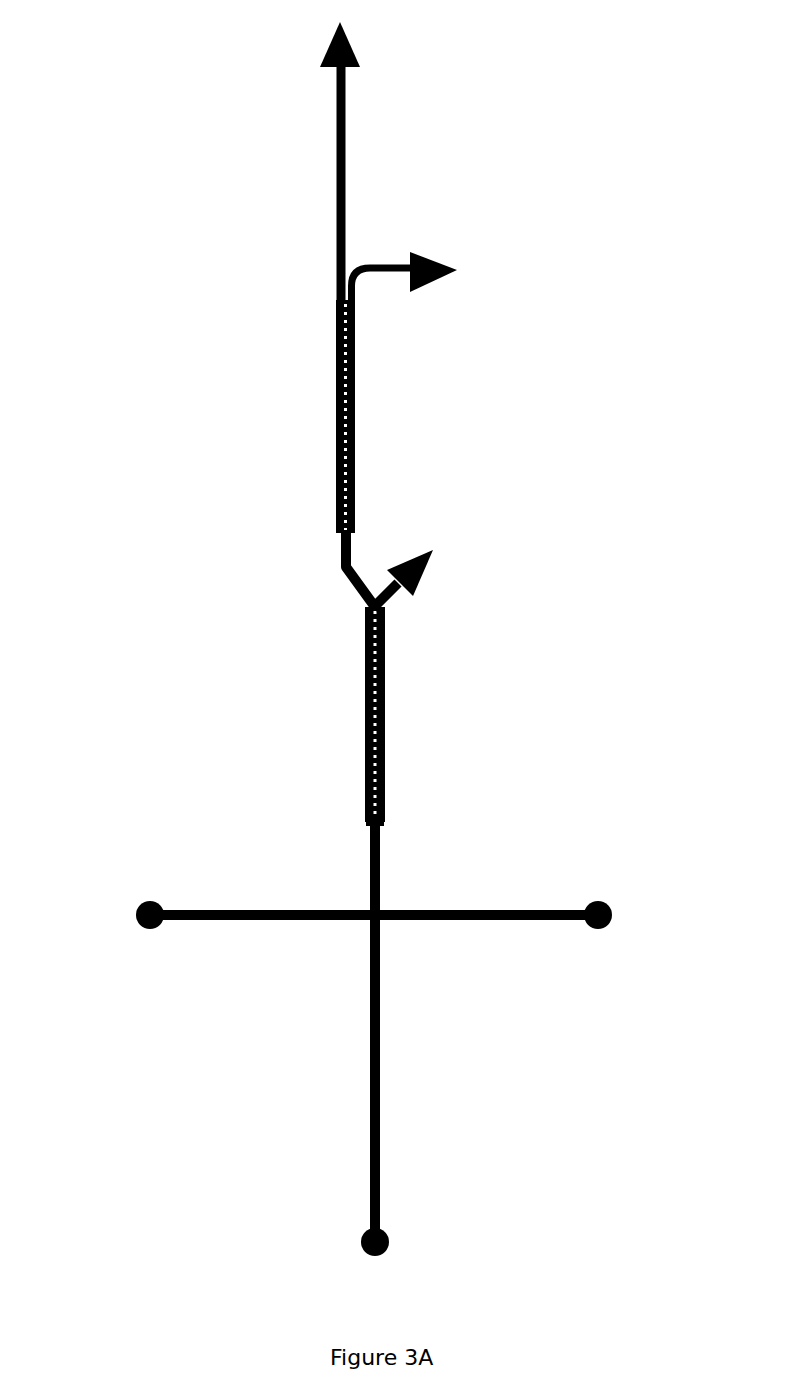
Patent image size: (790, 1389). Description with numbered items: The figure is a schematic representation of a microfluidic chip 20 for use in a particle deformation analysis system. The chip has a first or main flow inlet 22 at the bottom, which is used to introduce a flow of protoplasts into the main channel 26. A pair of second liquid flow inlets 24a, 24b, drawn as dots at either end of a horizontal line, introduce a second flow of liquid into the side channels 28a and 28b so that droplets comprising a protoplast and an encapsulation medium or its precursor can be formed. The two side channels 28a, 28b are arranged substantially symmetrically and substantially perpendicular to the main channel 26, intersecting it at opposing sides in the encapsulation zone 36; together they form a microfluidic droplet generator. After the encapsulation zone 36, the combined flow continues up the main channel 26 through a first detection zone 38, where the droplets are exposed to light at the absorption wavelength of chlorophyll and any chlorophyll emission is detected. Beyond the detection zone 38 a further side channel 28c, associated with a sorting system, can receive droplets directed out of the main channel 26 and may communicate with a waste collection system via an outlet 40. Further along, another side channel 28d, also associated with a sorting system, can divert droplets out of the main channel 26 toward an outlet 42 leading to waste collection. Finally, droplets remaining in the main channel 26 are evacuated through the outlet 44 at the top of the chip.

The microfluidic chip 20 is at (527, 168).
The first or main flow inlet 22 is at (392, 1245).
The second liquid flow inlet 24a is at (137, 908).
The second liquid flow inlet 24b is at (612, 908).
The main channel 26 is at (337, 440).
The side channel 28a is at (212, 912).
The side channel 28b is at (427, 912).
The side channel 28c is at (385, 730).
The side channel 28d is at (355, 422).
The encapsulation zone 36 is at (358, 930).
The first detection zone 38 is at (390, 843).
The outlet 40 is at (425, 555).
The outlet 42 is at (445, 272).
The outlet 44 is at (355, 50).